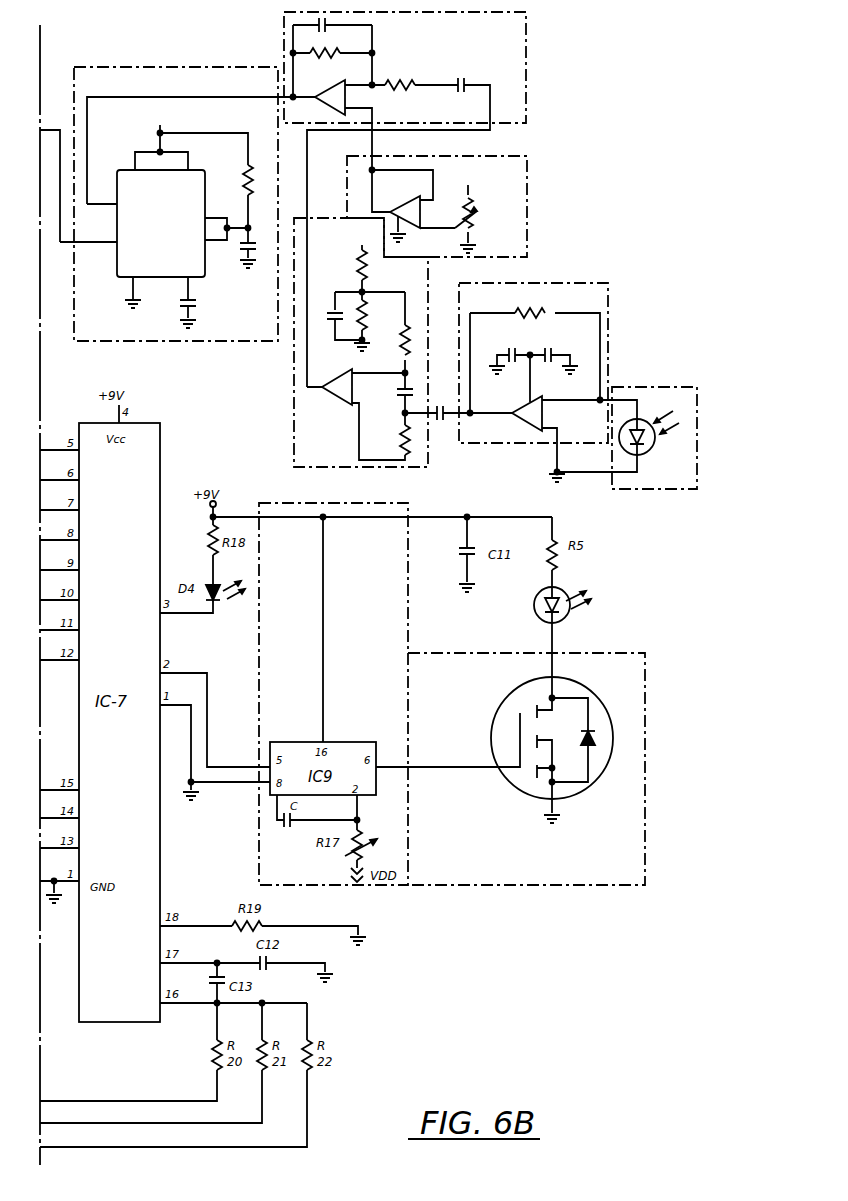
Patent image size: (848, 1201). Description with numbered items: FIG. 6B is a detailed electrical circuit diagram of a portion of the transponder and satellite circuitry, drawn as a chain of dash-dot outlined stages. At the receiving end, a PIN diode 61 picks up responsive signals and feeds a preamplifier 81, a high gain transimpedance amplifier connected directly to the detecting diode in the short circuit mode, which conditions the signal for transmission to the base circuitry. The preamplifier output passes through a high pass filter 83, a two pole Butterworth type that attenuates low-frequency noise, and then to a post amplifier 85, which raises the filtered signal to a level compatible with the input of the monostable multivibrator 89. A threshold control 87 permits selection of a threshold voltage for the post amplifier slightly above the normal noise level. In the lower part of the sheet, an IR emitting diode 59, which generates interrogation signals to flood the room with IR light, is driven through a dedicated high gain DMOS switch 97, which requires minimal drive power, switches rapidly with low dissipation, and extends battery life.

The monostable multivibrator 89 is at (177, 204).
The post amplifier 85 is at (405, 199).
The threshold control 87 is at (437, 206).
The high pass filter 83 is at (403, 342).
The preamplifier 81 is at (548, 382).
The PIN diode 61 is at (654, 438).
The IR emitting diode 59 is at (530, 615).
The DMOS switch 97 is at (492, 710).